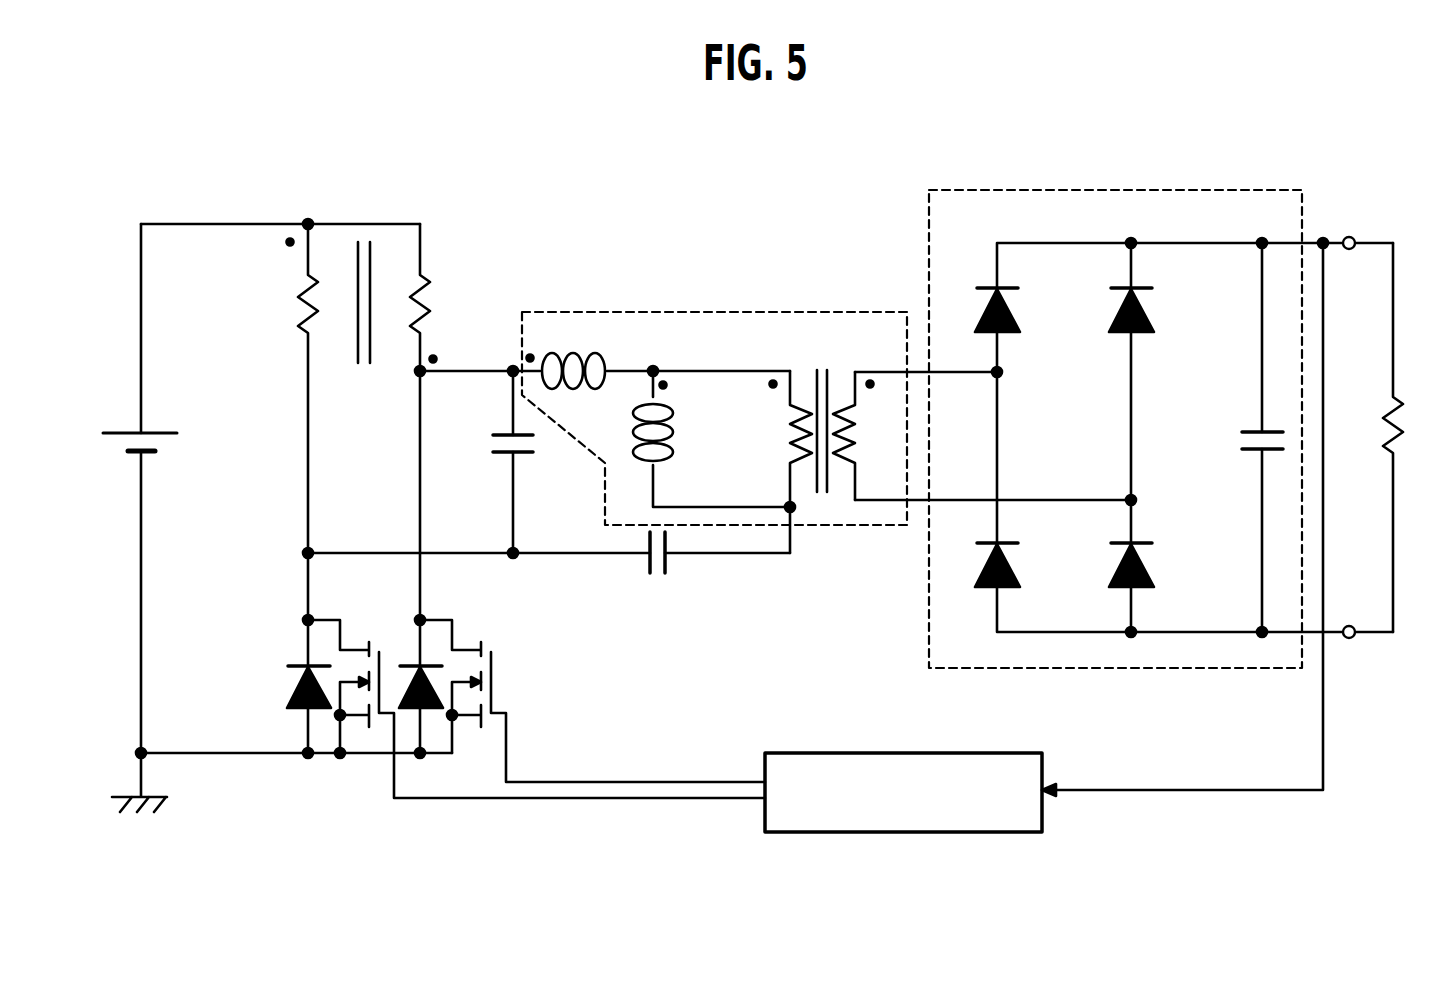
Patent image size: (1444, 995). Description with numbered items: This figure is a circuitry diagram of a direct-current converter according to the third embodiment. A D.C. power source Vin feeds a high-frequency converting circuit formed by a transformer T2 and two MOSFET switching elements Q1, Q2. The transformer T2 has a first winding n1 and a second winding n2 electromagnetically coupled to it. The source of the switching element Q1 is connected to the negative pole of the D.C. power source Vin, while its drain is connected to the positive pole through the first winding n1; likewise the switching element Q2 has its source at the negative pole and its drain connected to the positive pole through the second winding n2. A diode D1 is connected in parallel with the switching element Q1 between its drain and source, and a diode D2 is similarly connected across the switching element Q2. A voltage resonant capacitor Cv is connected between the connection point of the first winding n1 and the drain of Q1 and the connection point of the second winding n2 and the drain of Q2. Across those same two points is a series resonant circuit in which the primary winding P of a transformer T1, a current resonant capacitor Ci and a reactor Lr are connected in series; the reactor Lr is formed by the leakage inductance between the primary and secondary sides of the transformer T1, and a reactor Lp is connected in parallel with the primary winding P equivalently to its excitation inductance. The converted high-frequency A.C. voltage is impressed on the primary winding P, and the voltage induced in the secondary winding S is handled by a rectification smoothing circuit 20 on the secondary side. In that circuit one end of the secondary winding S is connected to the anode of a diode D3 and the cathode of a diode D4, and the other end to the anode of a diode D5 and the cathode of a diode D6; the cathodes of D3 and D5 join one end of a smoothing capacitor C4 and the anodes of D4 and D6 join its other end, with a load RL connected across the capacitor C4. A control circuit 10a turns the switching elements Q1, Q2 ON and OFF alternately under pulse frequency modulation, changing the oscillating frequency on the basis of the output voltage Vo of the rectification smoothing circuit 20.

The rectification smoothing circuit 20 is at (1182, 190).
The control circuit 10a is at (847, 752).
The D.C. power source Vin is at (126, 488).
The first winding n1 is at (435, 422).
The second winding n2 is at (294, 422).
The transformer T2 is at (362, 320).
The reactor Lr is at (583, 351).
The reactor Lp is at (695, 439).
The voltage resonant capacitor Cv is at (530, 462).
The current resonant capacitor Ci is at (651, 558).
The transformer T1 is at (821, 413).
The primary winding P is at (787, 439).
The secondary winding S is at (854, 436).
The switching element Q1 is at (590, 683).
The switching element Q2 is at (534, 691).
The diode D1 is at (414, 686).
The diode D2 is at (300, 686).
The diode D3 is at (983, 310).
The diode D4 is at (983, 565).
The diode D5 is at (1115, 310).
The diode D6 is at (1115, 565).
The smoothing capacitor C4 is at (1244, 437).
The load RL is at (1409, 437).
The output voltage Vo is at (1326, 240).